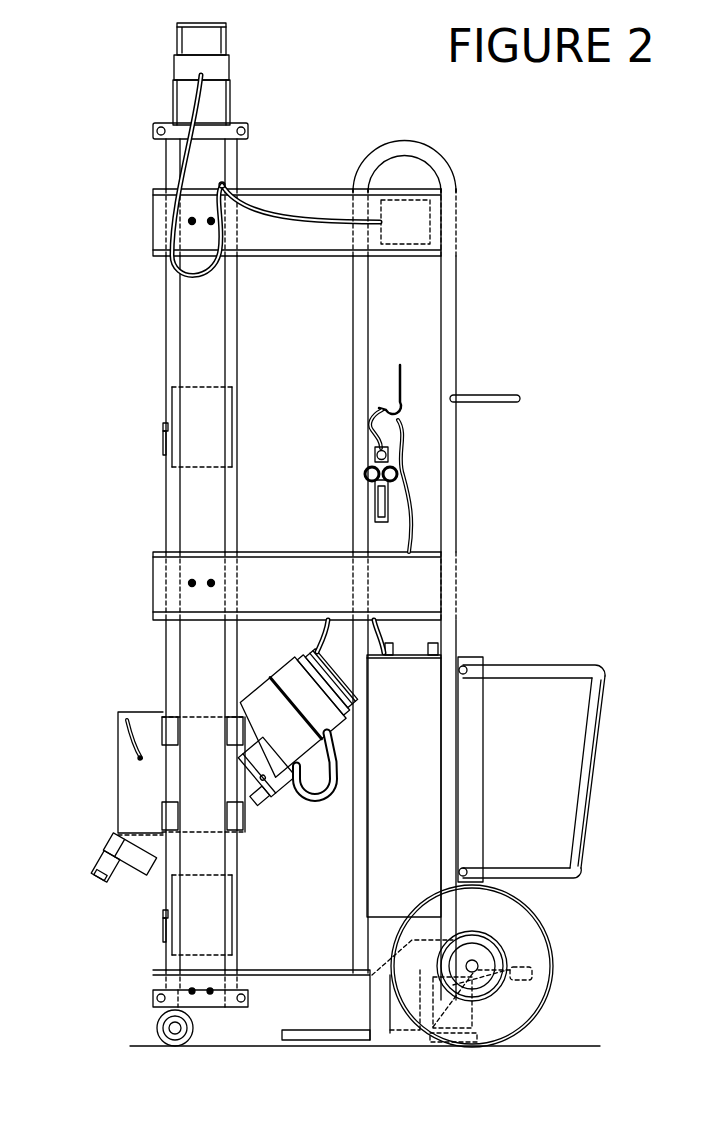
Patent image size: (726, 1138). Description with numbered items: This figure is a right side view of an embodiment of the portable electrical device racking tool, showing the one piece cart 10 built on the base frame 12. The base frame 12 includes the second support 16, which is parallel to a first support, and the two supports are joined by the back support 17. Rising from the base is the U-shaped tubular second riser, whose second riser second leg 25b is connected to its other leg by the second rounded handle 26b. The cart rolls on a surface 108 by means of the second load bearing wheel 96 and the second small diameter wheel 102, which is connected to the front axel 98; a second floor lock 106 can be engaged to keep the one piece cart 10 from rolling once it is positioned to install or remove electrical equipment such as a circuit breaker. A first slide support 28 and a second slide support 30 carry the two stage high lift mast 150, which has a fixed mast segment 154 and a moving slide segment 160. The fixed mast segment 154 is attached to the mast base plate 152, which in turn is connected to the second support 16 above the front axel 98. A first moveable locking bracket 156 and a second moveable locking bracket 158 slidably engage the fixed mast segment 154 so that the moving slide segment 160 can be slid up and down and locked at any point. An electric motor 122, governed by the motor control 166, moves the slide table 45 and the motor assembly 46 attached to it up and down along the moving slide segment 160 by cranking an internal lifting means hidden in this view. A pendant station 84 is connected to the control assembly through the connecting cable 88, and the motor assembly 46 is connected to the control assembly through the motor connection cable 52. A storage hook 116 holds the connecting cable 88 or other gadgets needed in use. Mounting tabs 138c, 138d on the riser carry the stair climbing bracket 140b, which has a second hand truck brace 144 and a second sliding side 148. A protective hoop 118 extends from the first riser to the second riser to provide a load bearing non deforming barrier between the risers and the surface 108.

The one piece cart 10 is at (518, 147).
The base frame 12 is at (355, 1052).
The second support 16 is at (313, 983).
The back support 17 is at (405, 1027).
The second riser second leg 25b is at (360, 282).
The second rounded handle 26b is at (402, 147).
The first slide support 28 is at (313, 567).
The second slide support 30 is at (313, 200).
The slide table 45 is at (145, 723).
The motor assembly 46 is at (74, 891).
The motor connection cable 52 is at (318, 797).
The pendant station 84 is at (365, 472).
The connecting cable 88 is at (413, 508).
The second load bearing wheel 96 is at (513, 917).
The front axel 98 is at (175, 1036).
The second small diameter wheel 102 is at (165, 1038).
The second floor lock 106 is at (458, 1015).
The surface 108 is at (525, 1045).
The storage hook 116 is at (403, 374).
The protective hoop 118 is at (498, 395).
The electric motor 122 is at (197, 43).
The mounting tab 138c is at (466, 667).
The mounting tab 138d is at (466, 870).
The stair climbing bracket 140b is at (612, 670).
The second hand truck brace 144 is at (553, 672).
The second sliding side 148 is at (588, 818).
The two stage high lift mast 150 is at (246, 317).
The mast base plate 152 is at (208, 1010).
The fixed mast segment 154 is at (197, 353).
The first moveable locking bracket 156 is at (170, 397).
The second moveable locking bracket 158 is at (232, 892).
The moving slide segment 160 is at (172, 305).
The motor control 166 is at (407, 222).